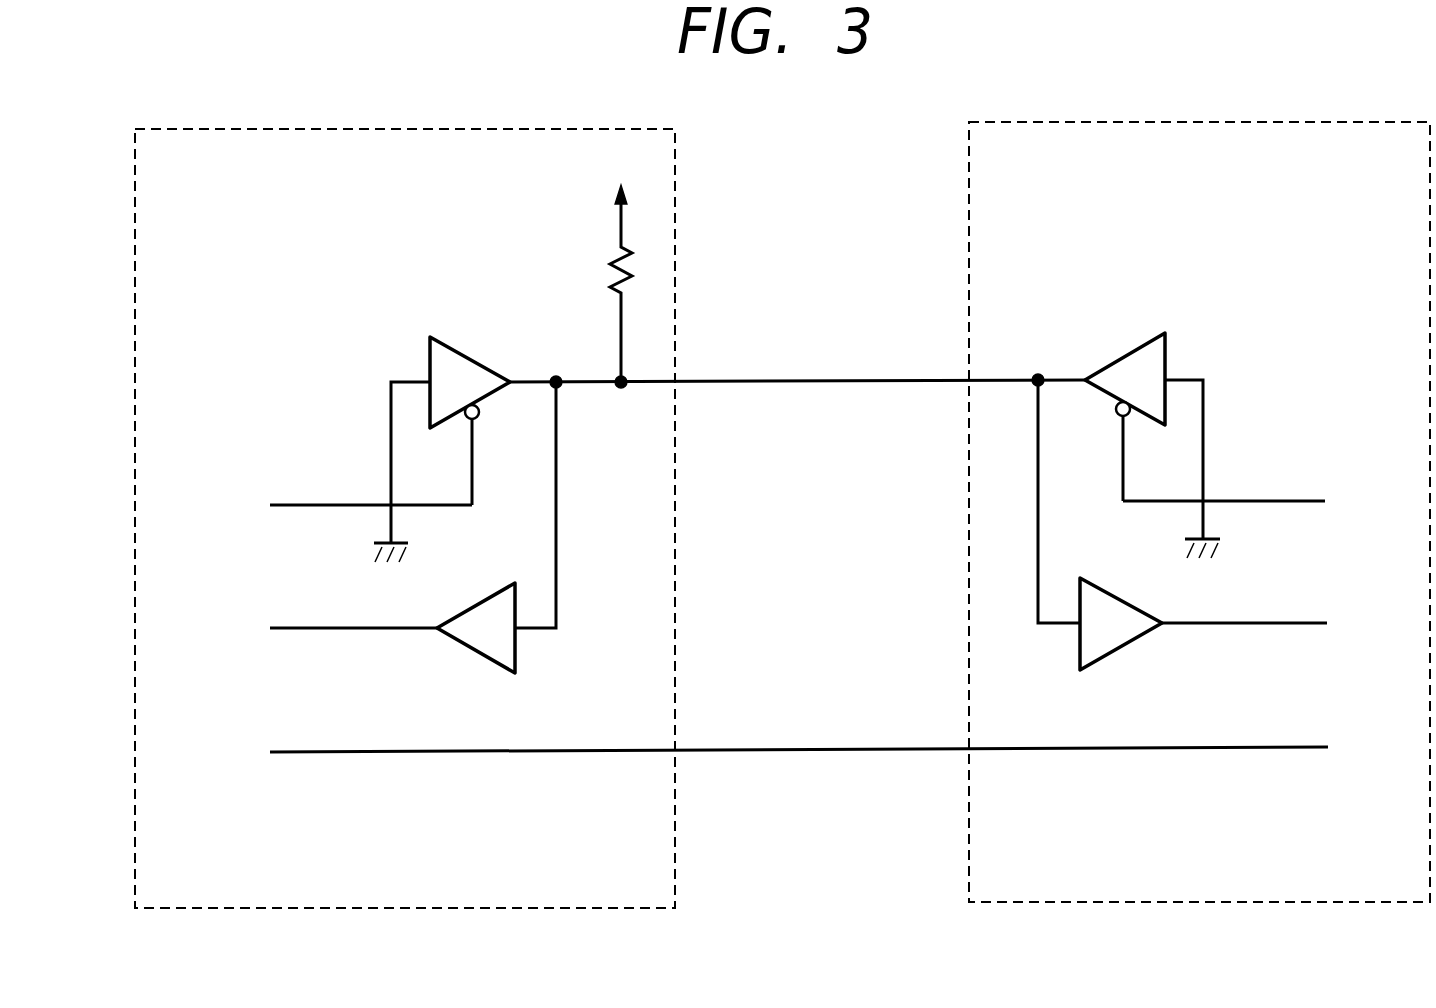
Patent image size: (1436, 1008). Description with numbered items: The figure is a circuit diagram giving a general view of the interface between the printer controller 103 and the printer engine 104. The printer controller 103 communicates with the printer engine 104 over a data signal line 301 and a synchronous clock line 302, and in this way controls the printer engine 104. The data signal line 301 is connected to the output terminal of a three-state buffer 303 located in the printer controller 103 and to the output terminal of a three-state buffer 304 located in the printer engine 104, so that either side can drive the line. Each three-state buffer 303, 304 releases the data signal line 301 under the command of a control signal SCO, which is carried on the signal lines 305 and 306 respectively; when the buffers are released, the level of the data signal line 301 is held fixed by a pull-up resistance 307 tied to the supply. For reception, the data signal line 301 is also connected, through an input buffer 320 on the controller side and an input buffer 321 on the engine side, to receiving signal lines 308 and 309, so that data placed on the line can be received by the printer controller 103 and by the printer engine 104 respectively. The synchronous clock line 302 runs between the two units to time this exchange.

The printer controller 103 is at (198, 128).
The printer engine 104 is at (1355, 120).
The data signal line 301 is at (762, 378).
The synchronous clock line 302 is at (513, 753).
The three-state buffer 303 is at (448, 342).
The three-state buffer 304 is at (1137, 350).
The signal line 305 is at (318, 505).
The signal line 306 is at (1263, 500).
The pull-up resistance 307 is at (608, 273).
The receiving signal line 308 is at (375, 630).
The receiving signal line 309 is at (1220, 625).
The input buffer 320 is at (518, 645).
The input buffer 321 is at (1080, 648).